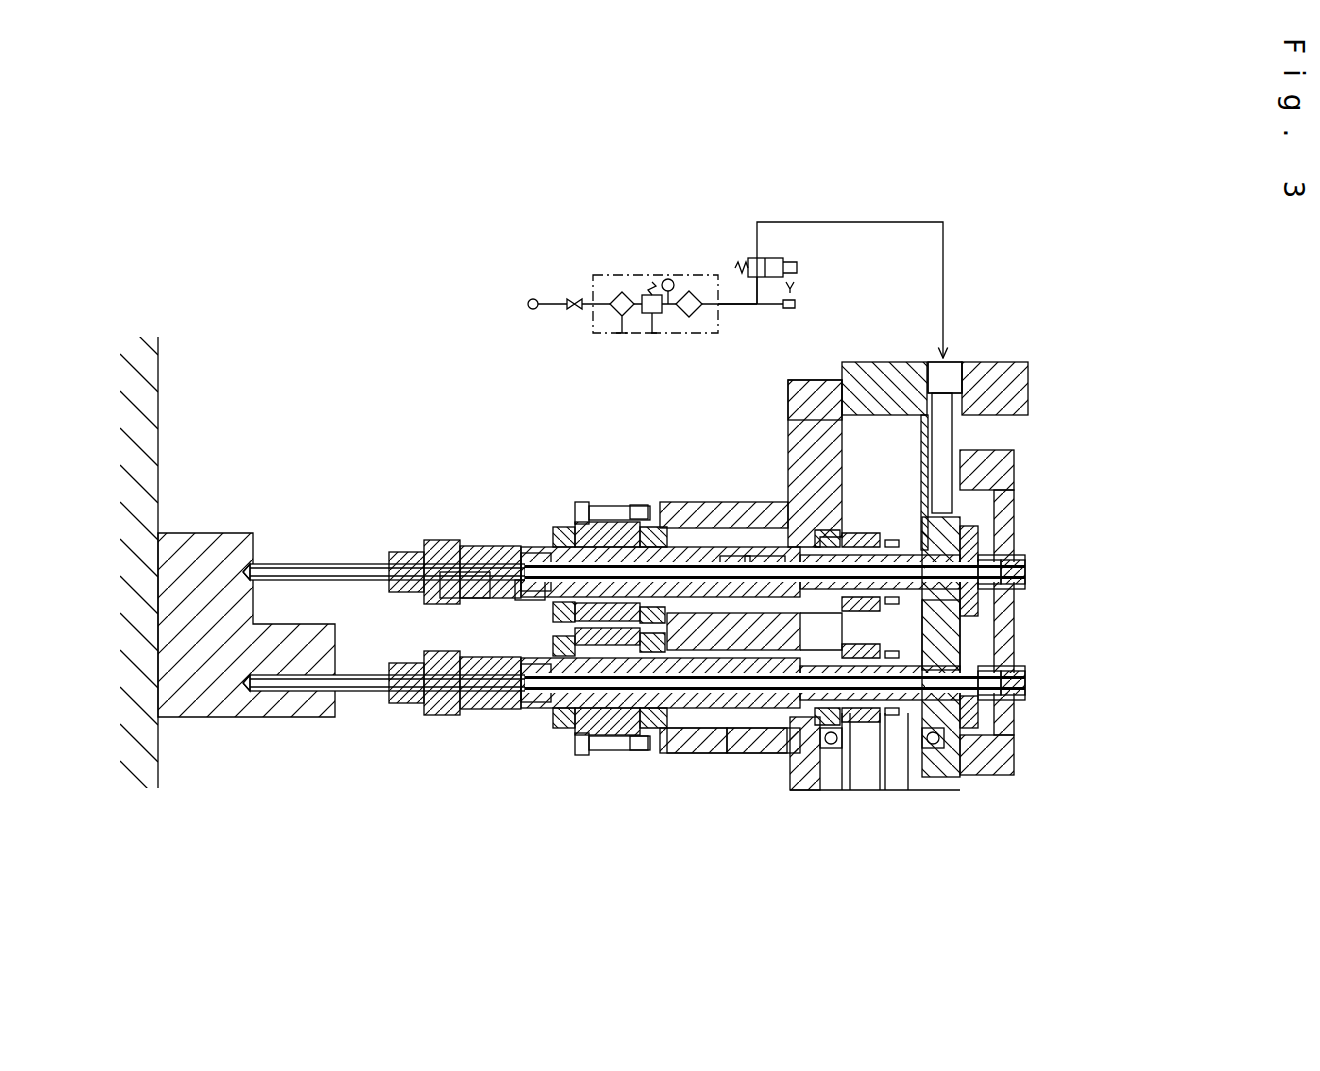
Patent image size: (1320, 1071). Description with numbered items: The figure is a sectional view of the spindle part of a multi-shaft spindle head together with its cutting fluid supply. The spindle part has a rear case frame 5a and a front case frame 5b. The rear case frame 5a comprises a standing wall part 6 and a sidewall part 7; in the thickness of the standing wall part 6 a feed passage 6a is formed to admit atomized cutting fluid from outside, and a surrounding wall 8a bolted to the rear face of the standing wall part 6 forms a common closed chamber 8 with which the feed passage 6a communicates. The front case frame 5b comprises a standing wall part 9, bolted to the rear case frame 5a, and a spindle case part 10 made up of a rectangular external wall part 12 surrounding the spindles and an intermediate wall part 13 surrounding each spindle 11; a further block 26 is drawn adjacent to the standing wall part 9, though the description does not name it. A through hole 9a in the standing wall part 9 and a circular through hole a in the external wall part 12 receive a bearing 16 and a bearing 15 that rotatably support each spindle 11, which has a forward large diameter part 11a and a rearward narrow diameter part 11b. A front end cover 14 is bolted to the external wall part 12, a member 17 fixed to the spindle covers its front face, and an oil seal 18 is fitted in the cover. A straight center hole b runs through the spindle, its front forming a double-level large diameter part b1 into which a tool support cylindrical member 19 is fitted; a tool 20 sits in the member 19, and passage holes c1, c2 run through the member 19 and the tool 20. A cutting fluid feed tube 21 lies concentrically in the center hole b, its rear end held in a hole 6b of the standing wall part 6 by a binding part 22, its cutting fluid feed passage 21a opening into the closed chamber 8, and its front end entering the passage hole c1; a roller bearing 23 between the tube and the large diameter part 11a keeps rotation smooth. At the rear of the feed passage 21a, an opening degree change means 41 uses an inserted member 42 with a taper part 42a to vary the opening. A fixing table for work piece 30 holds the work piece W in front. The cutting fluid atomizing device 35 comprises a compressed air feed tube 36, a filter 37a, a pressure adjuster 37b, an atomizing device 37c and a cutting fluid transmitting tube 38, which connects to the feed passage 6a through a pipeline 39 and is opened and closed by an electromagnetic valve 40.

The fixing table for work piece 30 is at (155, 402).
The workpiece W is at (205, 548).
The tool 20 is at (310, 562).
The passage hole c2 is at (270, 564).
The tool support cylindrical member 19 is at (430, 542).
The forward large diameter part 11a is at (480, 547).
The passage hole c1 is at (462, 580).
The double-level large diameter part b1 is at (532, 590).
The spindle 11 is at (497, 528).
The rearward narrow diameter part 11b is at (760, 556).
The center hole b is at (735, 560).
The roller bearing 23 is at (530, 560).
The member 17 is at (560, 525).
The front end cover 14 is at (612, 520).
The oil seal 18 is at (583, 505).
The bearing 15 is at (655, 530).
The circular through hole a is at (640, 516).
The spindle case part 10 is at (705, 510).
The rectangular external wall part 12 is at (712, 754).
The intermediate wall part 13 is at (740, 754).
The standing wall part 9 is at (820, 395).
The front case frame 5b is at (785, 403).
The through hole 9a is at (782, 746).
The bearing 16 is at (822, 534).
The block 26 is at (878, 405).
The feed passage 6a is at (948, 368).
The rear case frame 5a is at (918, 358).
The sidewall part 7 is at (1010, 368).
The common closed chamber 8 is at (1000, 480).
The surrounding wall 8a is at (1005, 777).
The standing wall part 6 is at (945, 779).
The hole 6b is at (920, 662).
The binding part 22 is at (972, 540).
The inserted member 42 is at (1026, 572).
The taper part 42a is at (1005, 560).
The opening degree change means 41 is at (1034, 563).
The cutting fluid feed passage 21a is at (860, 540).
The cutting fluid feed tube 21 is at (895, 540).
The compressed air feed tube 36 is at (548, 300).
The cutting fluid atomizing device 35 is at (653, 270).
The filter 37a is at (617, 292).
The pressure adjuster 37b is at (645, 318).
The atomizing device 37c is at (689, 318).
The cutting fluid transmitting tube 38 is at (735, 305).
The pipeline 39 is at (850, 222).
The electromagnetic valve 40 is at (785, 262).